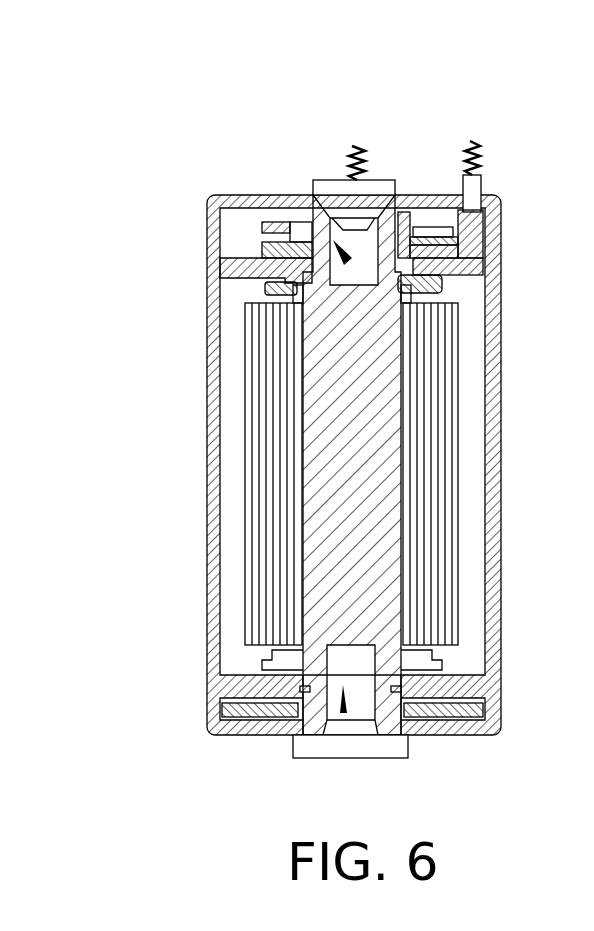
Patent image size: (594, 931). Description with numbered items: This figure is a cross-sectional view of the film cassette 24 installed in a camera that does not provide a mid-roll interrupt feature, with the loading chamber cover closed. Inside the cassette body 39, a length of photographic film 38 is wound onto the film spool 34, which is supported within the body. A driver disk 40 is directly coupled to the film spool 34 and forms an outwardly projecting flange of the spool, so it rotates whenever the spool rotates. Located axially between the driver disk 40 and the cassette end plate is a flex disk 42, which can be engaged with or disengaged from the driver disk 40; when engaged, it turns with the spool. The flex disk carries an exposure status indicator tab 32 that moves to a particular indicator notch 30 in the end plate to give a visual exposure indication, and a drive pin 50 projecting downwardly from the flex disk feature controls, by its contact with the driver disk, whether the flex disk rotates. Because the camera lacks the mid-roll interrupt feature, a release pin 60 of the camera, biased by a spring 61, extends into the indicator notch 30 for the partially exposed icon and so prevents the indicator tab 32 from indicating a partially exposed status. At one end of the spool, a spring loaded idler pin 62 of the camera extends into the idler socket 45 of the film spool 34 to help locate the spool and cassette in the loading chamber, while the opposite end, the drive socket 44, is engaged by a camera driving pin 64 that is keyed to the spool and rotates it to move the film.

The film cassette 24 is at (168, 93).
The indicator notch 30 is at (450, 185).
The exposure status indicator tab 32 is at (473, 228).
The film spool 34 is at (302, 353).
The photographic film 38 is at (245, 437).
The cassette body 39 is at (502, 393).
The driver disk 40 is at (265, 245).
The flex disk 42 is at (262, 228).
The drive socket 44 is at (343, 717).
The idler socket 45 is at (333, 240).
The drive pin 50 is at (498, 263).
The release pin 60 is at (481, 185).
The spring 61 is at (478, 140).
The spring loaded idler pin 62 is at (333, 180).
The camera driving pin 64 is at (408, 752).